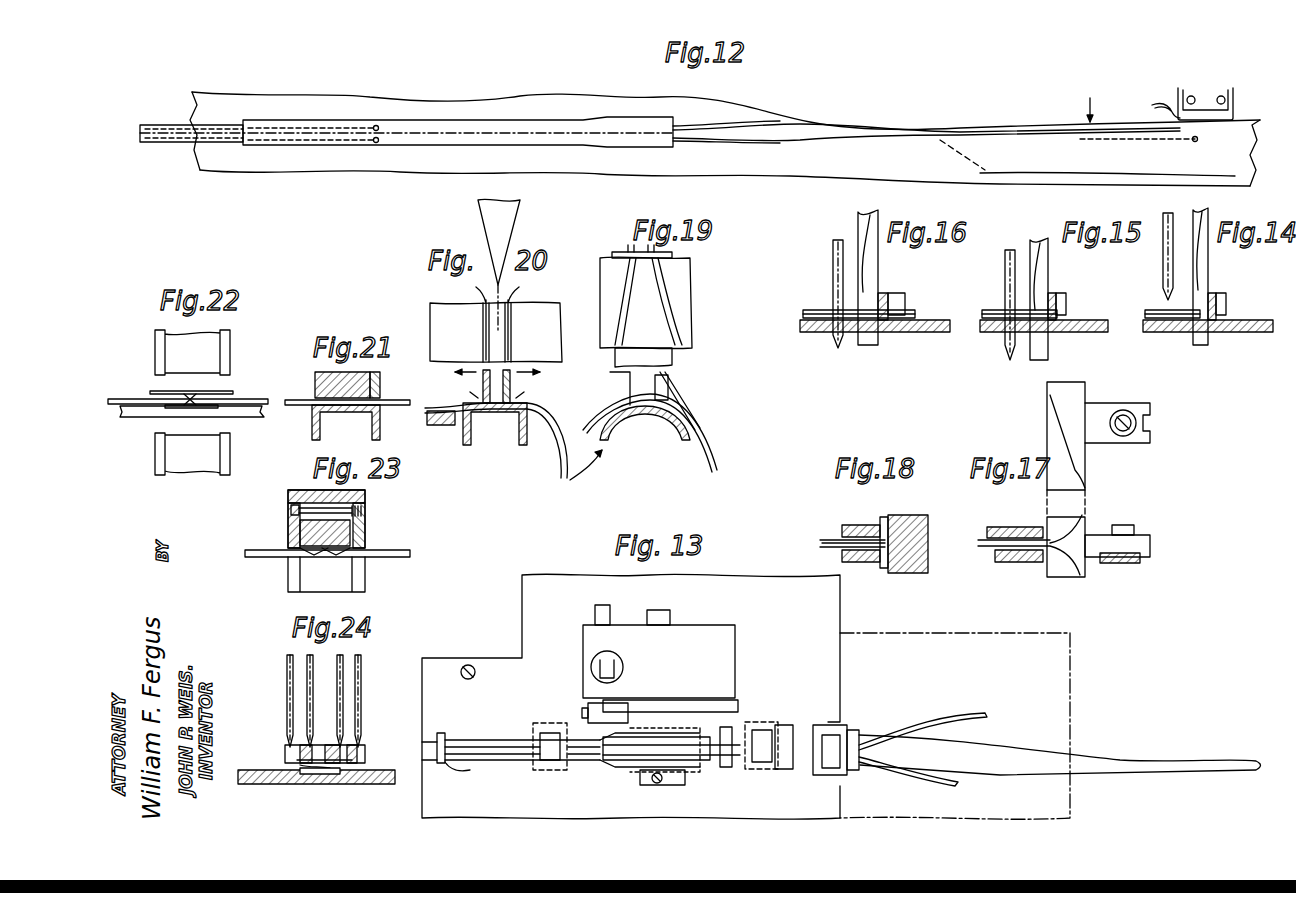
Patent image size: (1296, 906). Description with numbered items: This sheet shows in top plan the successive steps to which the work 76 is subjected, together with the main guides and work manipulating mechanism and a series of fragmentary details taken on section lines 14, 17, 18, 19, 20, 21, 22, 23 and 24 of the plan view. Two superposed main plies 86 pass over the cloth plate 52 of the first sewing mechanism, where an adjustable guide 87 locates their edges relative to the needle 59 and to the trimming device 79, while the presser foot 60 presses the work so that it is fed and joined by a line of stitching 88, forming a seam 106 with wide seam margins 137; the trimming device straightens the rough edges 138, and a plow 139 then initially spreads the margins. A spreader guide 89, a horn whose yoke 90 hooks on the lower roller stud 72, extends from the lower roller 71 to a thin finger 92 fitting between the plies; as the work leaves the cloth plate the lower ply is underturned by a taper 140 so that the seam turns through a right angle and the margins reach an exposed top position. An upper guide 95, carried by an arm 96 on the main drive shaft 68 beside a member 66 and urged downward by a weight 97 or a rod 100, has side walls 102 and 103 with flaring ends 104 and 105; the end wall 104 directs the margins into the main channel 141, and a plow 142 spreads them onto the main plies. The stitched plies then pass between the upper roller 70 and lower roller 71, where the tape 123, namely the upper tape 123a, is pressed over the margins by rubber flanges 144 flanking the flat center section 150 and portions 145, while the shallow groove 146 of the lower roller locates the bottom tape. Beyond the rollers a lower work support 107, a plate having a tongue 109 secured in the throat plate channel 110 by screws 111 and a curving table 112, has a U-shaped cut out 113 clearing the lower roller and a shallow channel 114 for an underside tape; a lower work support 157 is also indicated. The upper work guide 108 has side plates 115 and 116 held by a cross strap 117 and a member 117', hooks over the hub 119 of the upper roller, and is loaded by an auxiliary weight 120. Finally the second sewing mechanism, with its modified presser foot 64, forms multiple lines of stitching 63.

In FIG. 12, the section line 14 is at (1195, 201).
In FIG. 12, the section line 17 is at (1076, 193).
In FIG. 12, the section line 18 is at (982, 193).
In FIG. 12, the section line 19 is at (898, 193).
In FIG. 12, the section line 20 is at (800, 193).
In FIG. 12, the section line 21 is at (700, 150).
In FIG. 12, the section line 22 is at (667, 193).
In FIG. 12, the section line 23 is at (585, 193).
In FIG. 12, the section line 24 is at (375, 183).
In FIG. 17, the cloth plate 52 is at (1122, 561).
In FIG. 24, the needle 59 is at (330, 665).
In FIG. 16, the needle 59 is at (833, 258).
In FIG. 15, the needle 59 is at (1005, 266).
In FIG. 14, the needle 59 is at (1162, 247).
In FIG. 18, the presser foot 60 is at (853, 525).
In FIG. 17, the presser foot 60 is at (1036, 527).
In FIG. 12, the lines of stitching 63 is at (275, 126).
In FIG. 24, the presser foot 64 is at (363, 746).
In FIG. 13, the housing 66 is at (727, 640).
In FIG. 13, the main drive shaft 68 is at (660, 610).
In FIG. 22, the upper roller 70 is at (234, 358).
In FIG. 23, the upper roller 70 is at (368, 500).
In FIG. 13, the upper roller 70 is at (670, 750).
In FIG. 23, the lower roller 71 is at (368, 590).
In FIG. 22, the lower roller stud 72 is at (205, 455).
In FIG. 12, the work 76 is at (472, 90).
In FIG. 12, the trimming device 79 is at (1163, 140).
In FIG. 16, the trimming device 79 is at (880, 262).
In FIG. 15, the trimming device 79 is at (1052, 273).
In FIG. 14, the trimming device 79 is at (1210, 276).
In FIG. 12, the main plies 86 is at (1270, 188).
In FIG. 22, the main plies 86 is at (113, 406).
In FIG. 21, the main plies 86 is at (306, 401).
In FIG. 20, the main plies 86 is at (447, 308).
In FIG. 19, the main plies 86 is at (612, 287).
In FIG. 16, the main plies 86 is at (803, 314).
In FIG. 14, the main plies 86 is at (1147, 316).
In FIG. 18, the main plies 86 is at (832, 543).
In FIG. 17, the main plies 86 is at (1000, 544).
In FIG. 12, the adjustable guide 87 is at (1228, 100).
In FIG. 16, the adjustable guide 87 is at (890, 296).
In FIG. 15, the adjustable guide 87 is at (1066, 305).
In FIG. 14, the adjustable guide 87 is at (1226, 297).
In FIG. 12, the line of stitching 88 is at (1100, 142).
In FIG. 21, the spreader guide 89 is at (346, 422).
In FIG. 20, the spreader guide 89 is at (497, 407).
In FIG. 19, the spreader guide 89 is at (675, 358).
In FIG. 13, the spreader guide 89 is at (947, 752).
In FIG. 13, the yoke 90 is at (690, 772).
In FIG. 13, the finger 92 is at (1207, 762).
In FIG. 13, the upper guide 95 is at (863, 775).
In FIG. 13, the arm 96 is at (692, 700).
In FIG. 13, the weight 97 is at (852, 728).
In FIG. 13, the rod 100 is at (605, 607).
In FIG. 13, the side wall 102 is at (795, 730).
In FIG. 13, the side wall 103 is at (783, 772).
In FIG. 19, the flaring end 104 is at (697, 423).
In FIG. 13, the flaring end 104 is at (955, 712).
In FIG. 13, the flaring end 105 is at (952, 783).
In FIG. 12, the seam 106 is at (1088, 103).
In FIG. 12, the lower work support 107 is at (1128, 125).
In FIG. 22, the lower work support 107 is at (242, 420).
In FIG. 24, the lower work support 107 is at (262, 786).
In FIG. 13, the lower work support 107 is at (582, 570).
In FIG. 13, the upper work guide 108 is at (488, 740).
In FIG. 13, the tongue 109 is at (500, 655).
In FIG. 13, the throat plate channel 110 is at (432, 657).
In FIG. 13, the screws 111 is at (465, 664).
In FIG. 13, the curving table 112 is at (840, 656).
In FIG. 13, the U-shaped cut out 113 is at (805, 730).
In FIG. 13, the shallow channel 114 is at (450, 733).
In FIG. 13, the side plate 115 is at (515, 764).
In FIG. 13, the side plate 116 is at (512, 740).
In FIG. 13, the cross strap 117 is at (550, 763).
In FIG. 13, the sleeve 117' is at (469, 774).
In FIG. 13, the hub 119 is at (665, 750).
In FIG. 13, the auxiliary weight 120 is at (575, 712).
In FIG. 12, the tube 123 is at (542, 127).
In FIG. 22, the upper tape 123a is at (218, 393).
In FIG. 12, the seam margins 137 is at (697, 125).
In FIG. 20, the seam margins 137 is at (507, 334).
In FIG. 19, the seam margins 137 is at (660, 406).
In FIG. 18, the seam margins 137 is at (885, 515).
In FIG. 12, the rough edges 138 is at (1170, 100).
In FIG. 18, the plow 139 is at (911, 573).
In FIG. 17, the plow 139 is at (1085, 523).
In FIG. 13, the taper 140 is at (1005, 740).
In FIG. 13, the main channel 141 is at (803, 772).
In FIG. 21, the plow 142 is at (366, 374).
In FIG. 20, the plow 142 is at (478, 217).
In FIG. 13, the plow 142 is at (762, 768).
In FIG. 22, the rubber flanges 144 is at (160, 363).
In FIG. 23, the clamp 145 is at (366, 541).
In FIG. 23, the shallow groove 146 is at (312, 571).
In FIG. 22, the flat center section 150 is at (175, 347).
In FIG. 13, the lower work support 157 is at (970, 633).